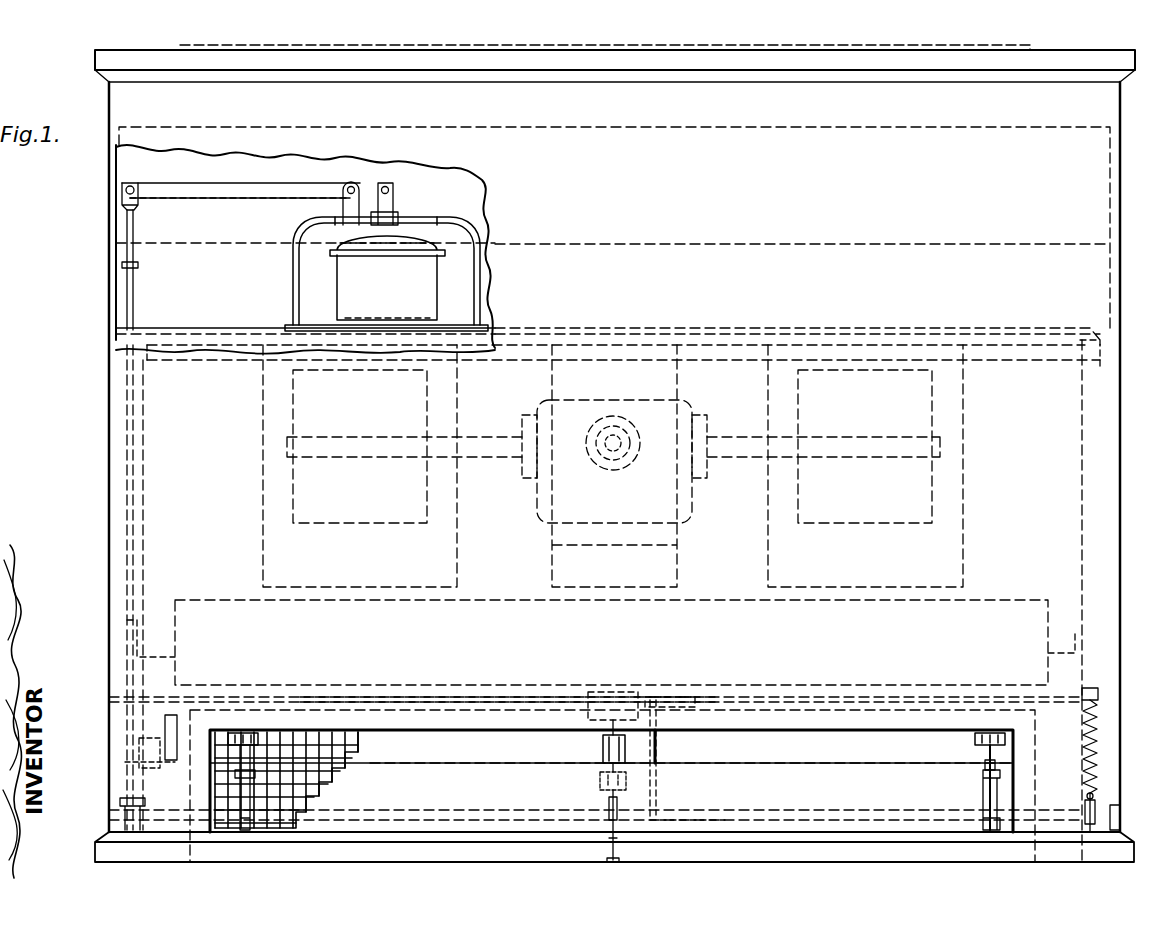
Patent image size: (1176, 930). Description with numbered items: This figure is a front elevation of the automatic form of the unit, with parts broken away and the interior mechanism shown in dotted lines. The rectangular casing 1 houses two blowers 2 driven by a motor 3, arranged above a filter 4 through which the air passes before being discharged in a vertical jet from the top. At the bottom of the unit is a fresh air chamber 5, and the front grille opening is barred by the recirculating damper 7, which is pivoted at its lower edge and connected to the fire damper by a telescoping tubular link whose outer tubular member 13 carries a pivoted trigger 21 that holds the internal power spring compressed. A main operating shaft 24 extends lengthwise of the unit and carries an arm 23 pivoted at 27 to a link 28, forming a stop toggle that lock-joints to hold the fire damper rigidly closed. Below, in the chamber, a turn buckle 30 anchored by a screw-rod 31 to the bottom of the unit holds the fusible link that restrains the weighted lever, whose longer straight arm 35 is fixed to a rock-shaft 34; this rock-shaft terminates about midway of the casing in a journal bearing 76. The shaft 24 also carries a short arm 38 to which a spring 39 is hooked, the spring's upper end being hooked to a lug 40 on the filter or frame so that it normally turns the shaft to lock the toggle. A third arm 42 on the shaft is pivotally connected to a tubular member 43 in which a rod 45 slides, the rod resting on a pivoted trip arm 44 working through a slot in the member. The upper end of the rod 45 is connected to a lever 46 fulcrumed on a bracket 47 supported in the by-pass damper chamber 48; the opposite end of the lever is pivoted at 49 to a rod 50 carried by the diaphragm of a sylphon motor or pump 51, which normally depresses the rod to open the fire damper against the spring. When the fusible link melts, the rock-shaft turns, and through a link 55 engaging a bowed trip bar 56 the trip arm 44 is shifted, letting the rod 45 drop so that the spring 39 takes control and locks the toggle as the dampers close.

The casing 1 is at (109, 380).
The blowers 2 is at (457, 517).
The motor 3 is at (692, 512).
The filter 4 is at (218, 600).
The fresh air chamber 5 is at (1100, 877).
The recirculating damper 7 is at (611, 781).
The outer tubular member 13 is at (607, 757).
The trigger 21 is at (605, 735).
The arm 23 is at (245, 815).
The main or operating shaft 24 is at (770, 810).
The pivot 27 is at (978, 775).
The link 28 is at (242, 745).
The turn buckle 30 is at (618, 785).
The screw-rod 31 is at (620, 838).
The rock-shaft 34 is at (430, 697).
The longer straight arm of weighted lever 35 is at (597, 692).
The short arm 38 is at (1098, 803).
The spring 39 is at (1098, 740).
The lug 40 is at (1100, 692).
The third arm 42 is at (140, 800).
The tubular member 43 is at (127, 640).
The trip arm 44 is at (162, 732).
The rod or telescoping member 45 is at (127, 483).
The lever 46 is at (192, 193).
The bracket 47 is at (316, 228).
The by-pass damper chamber 48 is at (305, 249).
The pivot 49 is at (388, 193).
The rod 50 is at (396, 210).
The sylphon motor or pump 51 is at (387, 278).
The link 55 is at (152, 762).
The trip bar 56 is at (157, 751).
The journal bearing 76 is at (658, 748).